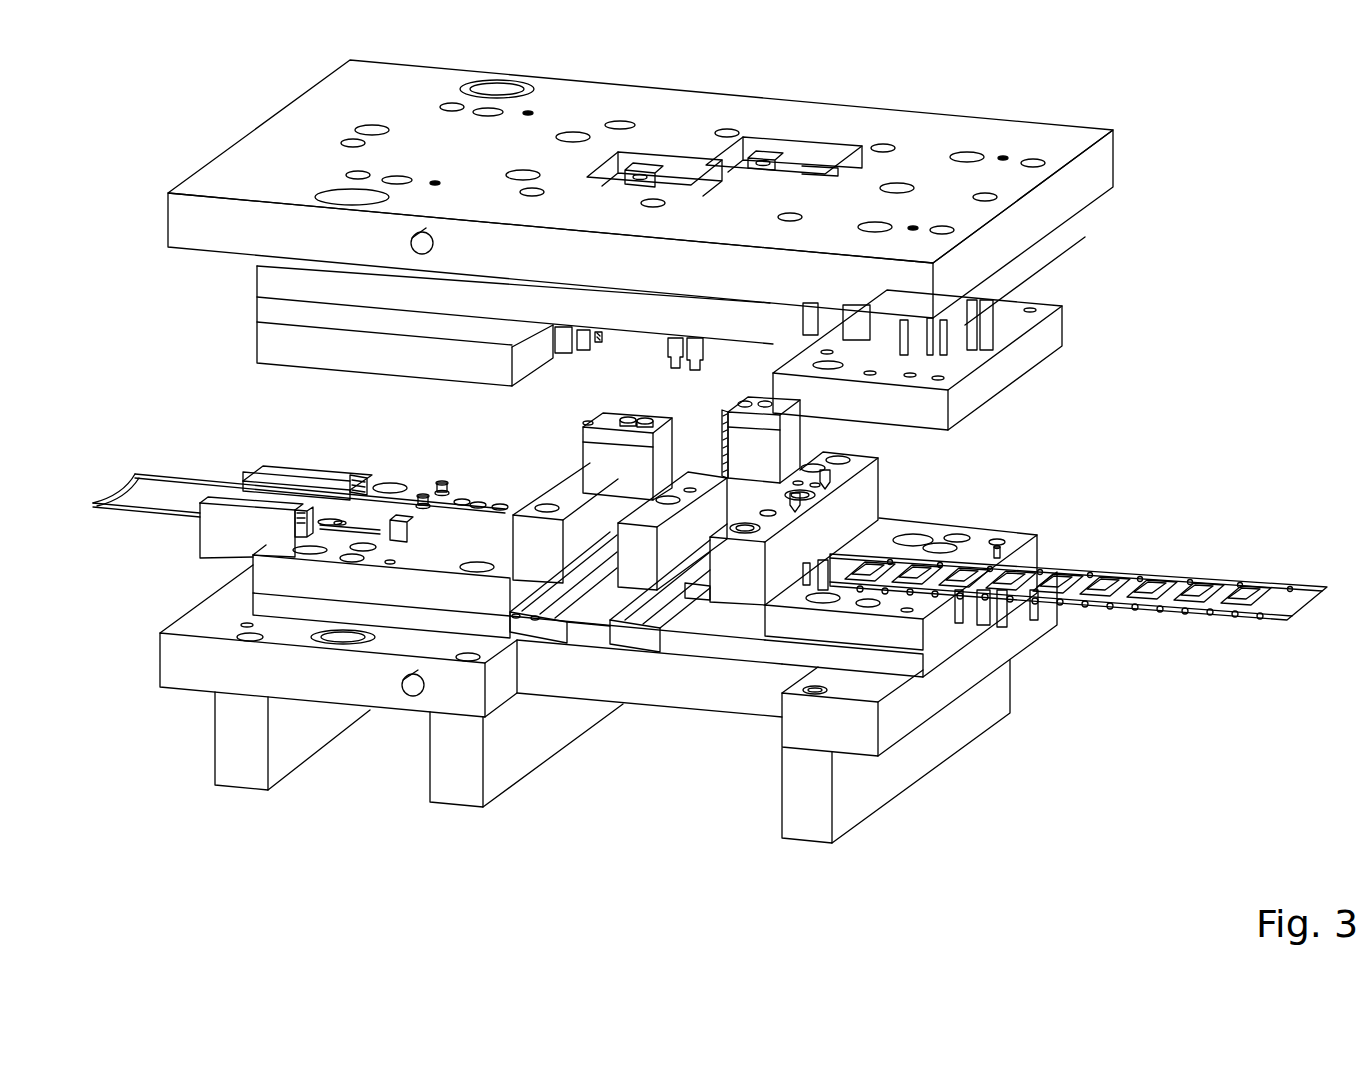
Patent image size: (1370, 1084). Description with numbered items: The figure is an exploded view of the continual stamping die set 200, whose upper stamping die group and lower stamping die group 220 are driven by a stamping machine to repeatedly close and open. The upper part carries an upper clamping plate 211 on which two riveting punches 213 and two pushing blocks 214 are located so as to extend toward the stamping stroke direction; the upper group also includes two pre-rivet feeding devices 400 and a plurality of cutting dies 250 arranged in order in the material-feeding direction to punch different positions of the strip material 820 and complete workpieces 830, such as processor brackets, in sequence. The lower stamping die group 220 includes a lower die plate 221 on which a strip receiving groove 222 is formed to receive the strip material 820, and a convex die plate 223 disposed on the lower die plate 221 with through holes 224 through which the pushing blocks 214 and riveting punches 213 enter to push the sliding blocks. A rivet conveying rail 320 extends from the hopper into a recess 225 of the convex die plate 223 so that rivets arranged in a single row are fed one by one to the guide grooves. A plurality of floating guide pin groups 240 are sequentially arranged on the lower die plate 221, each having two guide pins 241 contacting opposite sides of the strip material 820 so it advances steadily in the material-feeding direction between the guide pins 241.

The continual stamping die set 200 is at (1099, 128).
The pre-rivet feeding device 400 is at (690, 186).
The upper clamping plate 211 is at (276, 271).
The riveting punch 213 is at (704, 366).
The pushing block 214 is at (584, 347).
The cutting die 250 is at (870, 318).
The through hole 224 is at (702, 476).
The convex die plate 223 is at (868, 474).
The lower die plate 221 is at (272, 580).
The strip receiving groove 222 is at (828, 544).
The workpiece 830 is at (1125, 563).
The rivet conveying rail 320 is at (545, 618).
The recess 225 is at (607, 620).
The lower stamping die group 220 is at (1010, 689).
The floating guide pin group 240 is at (296, 410).
The guide pin 241 is at (443, 486).
The strip material 820 is at (156, 487).